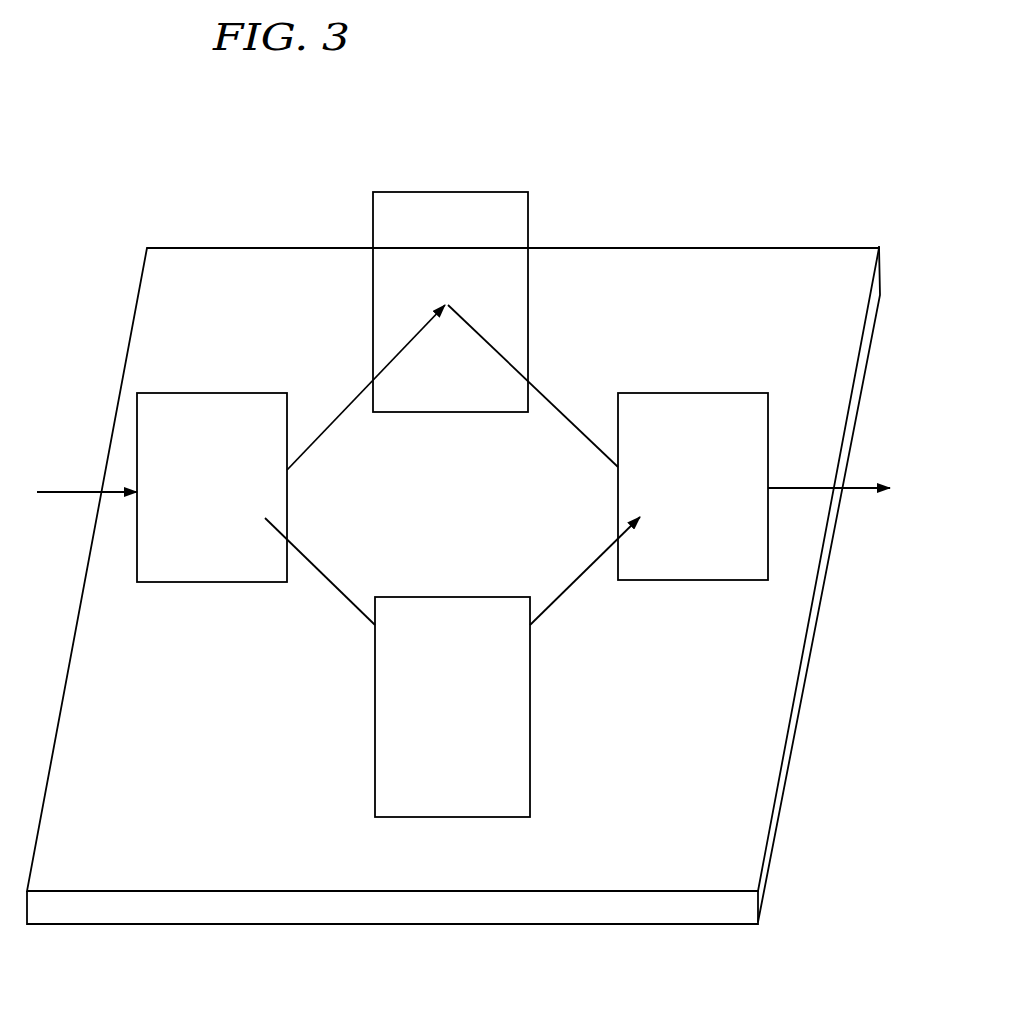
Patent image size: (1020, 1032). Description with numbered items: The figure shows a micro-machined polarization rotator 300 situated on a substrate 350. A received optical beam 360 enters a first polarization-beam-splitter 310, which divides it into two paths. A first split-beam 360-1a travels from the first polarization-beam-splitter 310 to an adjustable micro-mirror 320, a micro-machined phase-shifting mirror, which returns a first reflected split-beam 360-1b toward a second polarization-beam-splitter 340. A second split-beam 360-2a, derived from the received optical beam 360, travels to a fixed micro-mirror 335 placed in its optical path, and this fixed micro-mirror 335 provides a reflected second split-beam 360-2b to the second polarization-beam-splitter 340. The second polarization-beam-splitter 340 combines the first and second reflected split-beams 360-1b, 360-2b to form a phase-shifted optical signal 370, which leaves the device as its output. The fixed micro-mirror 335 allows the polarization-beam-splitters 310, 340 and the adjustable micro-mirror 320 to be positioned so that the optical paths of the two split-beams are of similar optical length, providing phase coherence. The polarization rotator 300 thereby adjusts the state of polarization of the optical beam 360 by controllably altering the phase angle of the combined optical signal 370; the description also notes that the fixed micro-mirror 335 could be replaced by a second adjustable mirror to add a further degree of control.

The micro-machined polarization rotator 300 is at (626, 154).
The first polarization-beam-splitter 310 is at (203, 393).
The adjustable micro-mirror 320 is at (528, 207).
The fixed micro-mirror 335 is at (530, 773).
The second polarization-beam-splitter 340 is at (695, 393).
The substrate 350 is at (415, 908).
The received optical beam 360 is at (72, 493).
The first split-beam 360-1a is at (328, 432).
The first reflected split-beam 360-1b is at (575, 428).
The second split-beam 360-2a is at (343, 597).
The reflected second split-beam 360-2b is at (560, 600).
The phase-shifted optical signal 370 is at (838, 492).